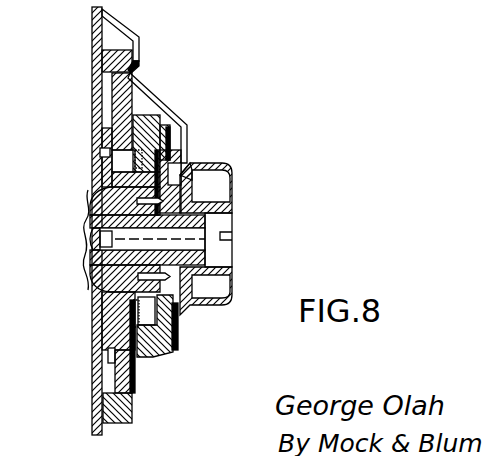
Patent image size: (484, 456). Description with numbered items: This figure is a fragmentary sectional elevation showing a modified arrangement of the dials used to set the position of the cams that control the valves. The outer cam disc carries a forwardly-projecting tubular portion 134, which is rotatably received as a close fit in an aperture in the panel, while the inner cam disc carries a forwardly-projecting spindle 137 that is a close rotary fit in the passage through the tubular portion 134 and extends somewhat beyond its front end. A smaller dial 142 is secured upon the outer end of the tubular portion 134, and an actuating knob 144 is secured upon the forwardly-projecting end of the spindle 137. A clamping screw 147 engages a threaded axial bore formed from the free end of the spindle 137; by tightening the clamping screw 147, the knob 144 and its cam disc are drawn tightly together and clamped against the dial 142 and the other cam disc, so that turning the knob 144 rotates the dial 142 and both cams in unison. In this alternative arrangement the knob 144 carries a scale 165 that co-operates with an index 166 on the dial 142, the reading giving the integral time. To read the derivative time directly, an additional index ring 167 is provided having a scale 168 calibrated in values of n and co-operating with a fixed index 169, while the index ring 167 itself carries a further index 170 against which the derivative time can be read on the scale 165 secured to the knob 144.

The tubular portion 134 is at (97, 273).
The spindle 137 is at (93, 198).
The dial 142 is at (157, 348).
The actuating knob 144 is at (232, 197).
The clamping screw 147 is at (227, 225).
The scale 165 is at (186, 167).
The index 166 is at (178, 328).
The index ring 167 is at (97, 61).
The scale 168 is at (132, 410).
The fixed index 169 is at (141, 46).
The further index 170 is at (167, 103).